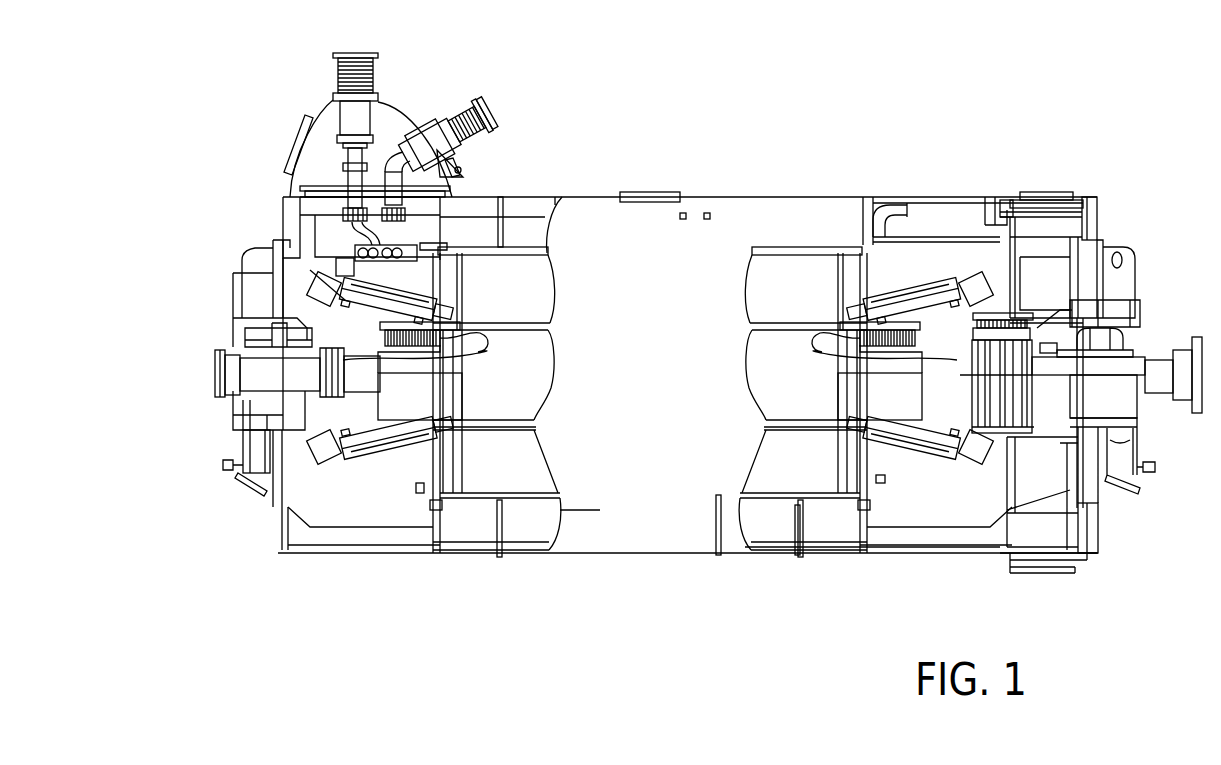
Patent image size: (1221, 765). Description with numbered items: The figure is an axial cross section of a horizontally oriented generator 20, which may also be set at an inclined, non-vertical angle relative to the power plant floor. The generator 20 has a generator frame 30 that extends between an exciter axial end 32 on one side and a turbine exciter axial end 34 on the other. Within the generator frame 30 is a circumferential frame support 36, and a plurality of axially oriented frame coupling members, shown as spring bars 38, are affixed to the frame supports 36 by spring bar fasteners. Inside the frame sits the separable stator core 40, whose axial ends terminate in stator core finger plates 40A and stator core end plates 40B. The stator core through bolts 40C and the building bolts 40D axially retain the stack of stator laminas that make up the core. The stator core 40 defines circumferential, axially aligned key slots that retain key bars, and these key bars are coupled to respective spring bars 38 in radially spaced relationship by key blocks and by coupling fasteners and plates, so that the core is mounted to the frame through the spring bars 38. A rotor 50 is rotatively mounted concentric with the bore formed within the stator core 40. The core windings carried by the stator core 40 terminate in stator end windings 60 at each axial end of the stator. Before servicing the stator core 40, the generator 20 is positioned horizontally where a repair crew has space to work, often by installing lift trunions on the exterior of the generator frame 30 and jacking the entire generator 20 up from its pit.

The generator 20 is at (623, 603).
The generator frame 30 is at (717, 210).
The exciter axial end 32 is at (283, 550).
The turbine exciter axial end 34 is at (1090, 220).
The circumferential frame support 36 is at (493, 213).
The spring bar 38 is at (555, 290).
The stator core 40 is at (515, 283).
The stator core finger plate 40A is at (437, 508).
The stator core end plate 40B is at (392, 212).
The stator core through bolt 40C is at (350, 278).
The building bolt 40D is at (405, 255).
The rotor 50 is at (213, 373).
The stator end winding 60 is at (310, 487).